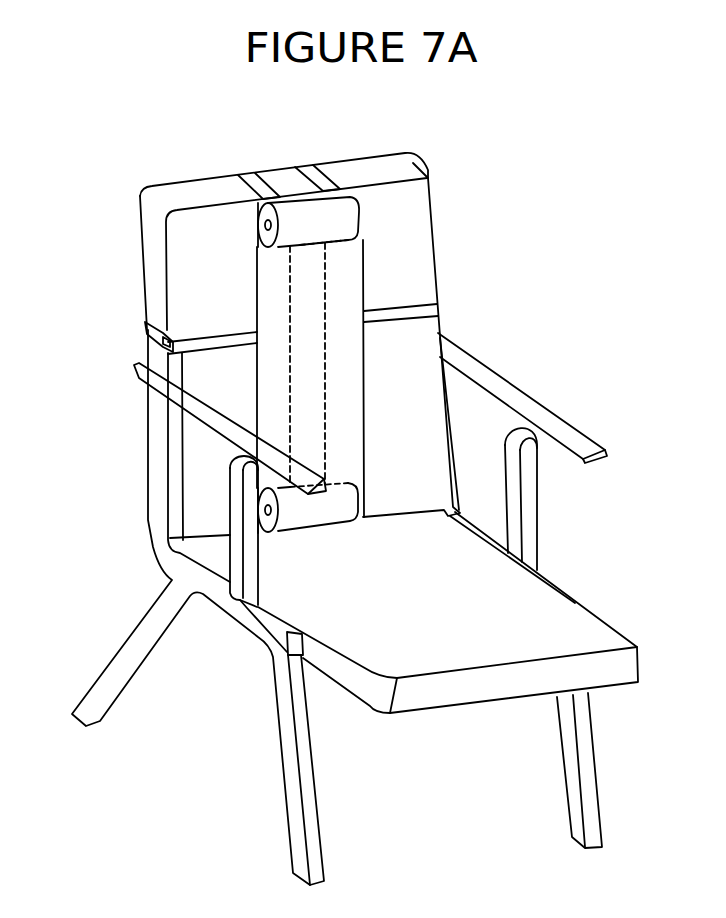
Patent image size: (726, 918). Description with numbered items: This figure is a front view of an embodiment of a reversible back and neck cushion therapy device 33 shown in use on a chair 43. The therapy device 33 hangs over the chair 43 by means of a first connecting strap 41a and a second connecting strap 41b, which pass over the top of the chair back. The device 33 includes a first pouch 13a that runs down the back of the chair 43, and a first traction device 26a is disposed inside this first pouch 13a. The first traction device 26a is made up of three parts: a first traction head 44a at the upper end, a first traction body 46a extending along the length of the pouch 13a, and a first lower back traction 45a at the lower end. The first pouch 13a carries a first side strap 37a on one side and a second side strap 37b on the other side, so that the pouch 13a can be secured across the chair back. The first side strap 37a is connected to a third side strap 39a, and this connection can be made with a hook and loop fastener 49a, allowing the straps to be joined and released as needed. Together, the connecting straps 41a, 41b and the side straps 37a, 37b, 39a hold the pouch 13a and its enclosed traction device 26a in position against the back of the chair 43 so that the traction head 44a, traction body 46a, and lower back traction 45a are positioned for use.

The reversible back and neck cushion therapy device 33 is at (245, 128).
The first traction device 26a is at (342, 268).
The first connecting strap 41a is at (262, 181).
The second connecting strap 41b is at (307, 177).
The first traction head 44a is at (350, 220).
The first lower back traction 45a is at (350, 503).
The first pouch 13a is at (350, 383).
The first traction body 46a is at (317, 347).
The first side strap 37a is at (228, 340).
The second side strap 37b is at (440, 313).
The third side strap 39a is at (165, 345).
The hook and loop fastener 49a is at (165, 352).
The chair 43 is at (550, 613).